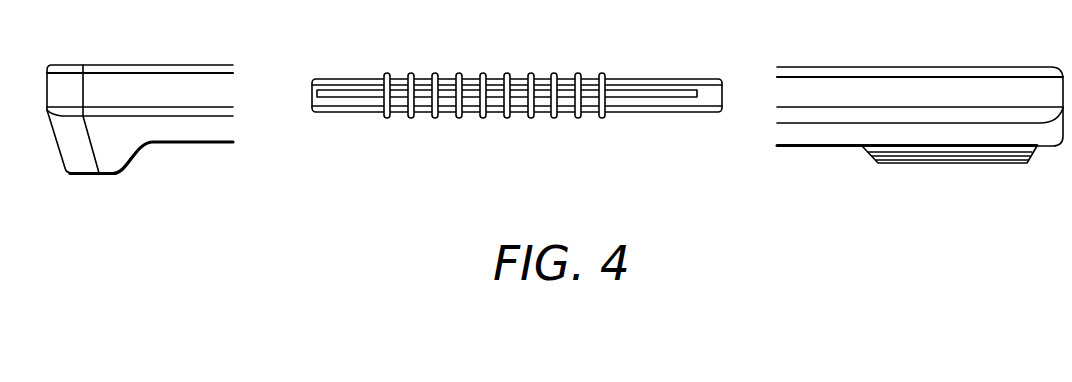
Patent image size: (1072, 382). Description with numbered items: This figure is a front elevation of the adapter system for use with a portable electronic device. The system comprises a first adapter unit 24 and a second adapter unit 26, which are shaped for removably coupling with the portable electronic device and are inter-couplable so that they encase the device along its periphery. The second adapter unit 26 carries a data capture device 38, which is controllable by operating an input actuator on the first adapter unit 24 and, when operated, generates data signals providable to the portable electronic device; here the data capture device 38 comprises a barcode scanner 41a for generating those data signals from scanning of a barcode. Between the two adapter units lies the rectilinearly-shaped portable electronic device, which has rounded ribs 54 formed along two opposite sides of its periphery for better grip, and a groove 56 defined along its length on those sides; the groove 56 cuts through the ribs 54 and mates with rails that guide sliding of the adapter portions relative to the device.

The first adapter unit 24 is at (883, 86).
The second adapter unit 26 is at (180, 80).
The data capture device 38 is at (517, 69).
The barcode scanner 41a is at (103, 178).
The ribs 54 is at (578, 74).
The groove 56 is at (435, 74).